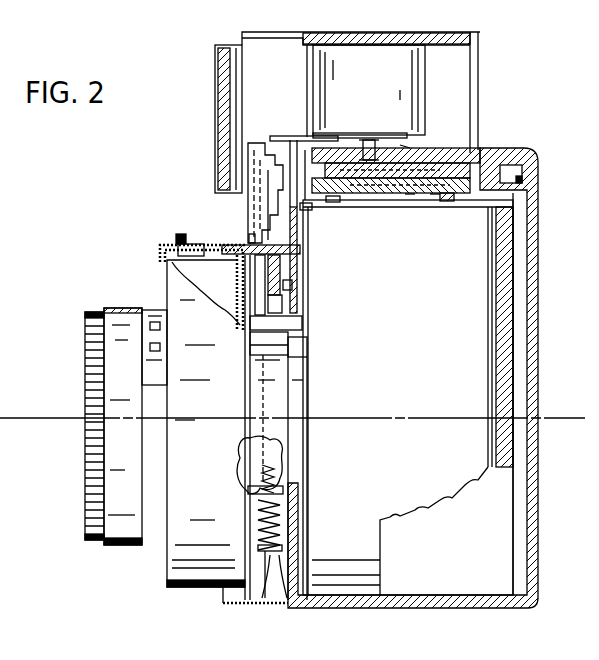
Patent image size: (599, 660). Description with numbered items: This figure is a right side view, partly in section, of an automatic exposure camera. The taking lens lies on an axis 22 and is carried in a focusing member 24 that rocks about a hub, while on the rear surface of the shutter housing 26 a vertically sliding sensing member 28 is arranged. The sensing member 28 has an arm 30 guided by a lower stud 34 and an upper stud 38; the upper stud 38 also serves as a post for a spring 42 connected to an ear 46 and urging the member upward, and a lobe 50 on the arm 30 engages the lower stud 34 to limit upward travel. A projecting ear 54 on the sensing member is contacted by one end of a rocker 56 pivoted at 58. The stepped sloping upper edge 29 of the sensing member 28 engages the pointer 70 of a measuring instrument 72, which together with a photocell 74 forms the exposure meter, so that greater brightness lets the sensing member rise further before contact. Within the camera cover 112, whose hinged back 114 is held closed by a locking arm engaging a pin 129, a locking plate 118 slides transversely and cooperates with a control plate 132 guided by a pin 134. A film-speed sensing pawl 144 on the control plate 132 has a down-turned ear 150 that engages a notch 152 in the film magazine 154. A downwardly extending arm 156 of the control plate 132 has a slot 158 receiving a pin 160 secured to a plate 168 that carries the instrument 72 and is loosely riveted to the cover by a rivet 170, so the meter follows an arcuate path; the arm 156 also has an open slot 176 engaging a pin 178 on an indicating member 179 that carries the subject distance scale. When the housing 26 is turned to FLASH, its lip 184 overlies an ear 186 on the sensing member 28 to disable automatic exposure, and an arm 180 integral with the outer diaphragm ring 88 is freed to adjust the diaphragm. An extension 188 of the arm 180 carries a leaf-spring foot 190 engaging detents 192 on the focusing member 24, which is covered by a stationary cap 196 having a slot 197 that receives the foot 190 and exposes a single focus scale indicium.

The axis 22 is at (27, 423).
The focusing member 24 is at (84, 340).
The shutter housing 26 is at (210, 462).
The sensing member 28 is at (256, 142).
The sloping upper edge 29 is at (268, 205).
The arm 30 is at (252, 534).
The lower stud 34 is at (248, 503).
The upper stud 38 is at (248, 333).
The spring 42 is at (264, 600).
The ear 46 is at (284, 600).
The lobe 50 is at (245, 600).
The projecting ear 54 is at (262, 298).
The rocker 56 is at (282, 296).
The pivot 58 is at (292, 284).
The pointer 70 is at (298, 136).
The measuring instrument 72 is at (375, 92).
The photocell 74 is at (216, 68).
The diaphragm ring 88 is at (240, 271).
The camera cover 112 is at (464, 158).
The back 114 is at (539, 345).
The locking plate 118 is at (455, 161).
The pin 129 is at (482, 180).
The control plate 132 is at (385, 200).
The pin 134 is at (338, 200).
The film-speed sensing pawl 144 is at (410, 198).
The down-turned ear 150 is at (435, 200).
The notch 152 is at (446, 200).
The magazine 154 is at (411, 377).
The downwardly extending arm 156 is at (298, 262).
The slot 158 is at (305, 213).
The pin 160 is at (304, 210).
The plate 168 is at (408, 148).
The rivet 170 is at (368, 140).
The open slot 176 is at (305, 342).
The pin 178 is at (302, 323).
The indicating member 179 is at (200, 256).
The arm 180 is at (180, 238).
The lip 184 is at (226, 246).
The ear 186 is at (250, 237).
The extension 188 is at (166, 265).
The leaf-spring foot 190 is at (152, 310).
The detents 192 is at (150, 326).
The stationary cap 196 is at (106, 307).
The slot 197 is at (146, 366).